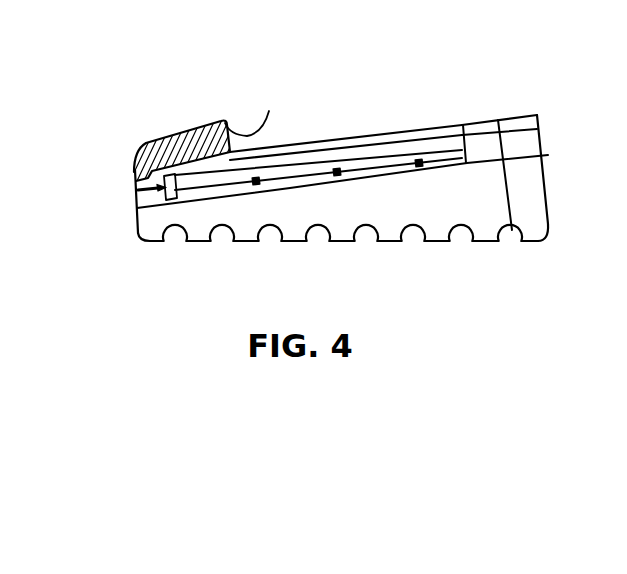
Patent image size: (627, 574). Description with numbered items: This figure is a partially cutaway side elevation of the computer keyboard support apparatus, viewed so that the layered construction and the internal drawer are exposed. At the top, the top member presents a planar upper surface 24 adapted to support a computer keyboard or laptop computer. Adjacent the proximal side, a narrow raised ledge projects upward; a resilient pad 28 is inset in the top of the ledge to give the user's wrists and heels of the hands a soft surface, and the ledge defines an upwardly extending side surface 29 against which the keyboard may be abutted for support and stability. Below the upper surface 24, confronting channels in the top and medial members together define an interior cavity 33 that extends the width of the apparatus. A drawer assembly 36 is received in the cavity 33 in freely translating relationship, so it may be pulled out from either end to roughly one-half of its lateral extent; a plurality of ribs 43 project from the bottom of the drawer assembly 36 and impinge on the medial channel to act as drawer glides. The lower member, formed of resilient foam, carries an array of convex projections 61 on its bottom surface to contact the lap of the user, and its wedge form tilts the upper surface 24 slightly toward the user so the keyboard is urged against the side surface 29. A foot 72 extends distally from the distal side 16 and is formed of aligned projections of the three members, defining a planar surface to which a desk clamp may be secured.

The distal side 16 is at (508, 181).
The planar upper surface 24 is at (437, 126).
The resilient pad 28 is at (191, 123).
The side surface 29 is at (269, 111).
The interior cavity 33 is at (166, 193).
The drawer assembly 36 is at (347, 160).
The ribs 43 is at (256, 186).
The convex projections 61 is at (300, 241).
The foot 72 is at (530, 146).